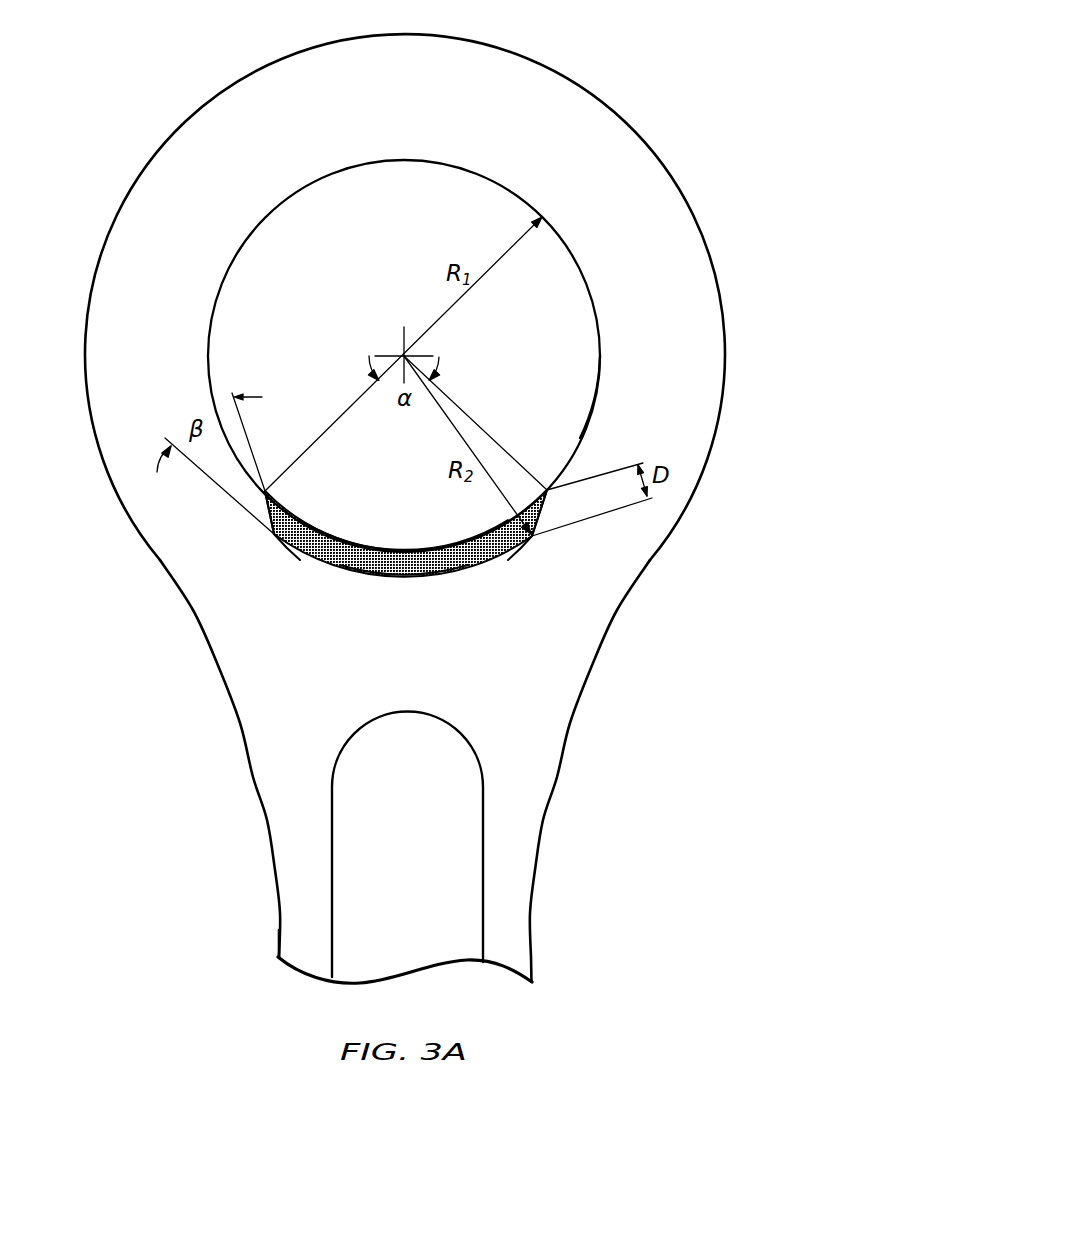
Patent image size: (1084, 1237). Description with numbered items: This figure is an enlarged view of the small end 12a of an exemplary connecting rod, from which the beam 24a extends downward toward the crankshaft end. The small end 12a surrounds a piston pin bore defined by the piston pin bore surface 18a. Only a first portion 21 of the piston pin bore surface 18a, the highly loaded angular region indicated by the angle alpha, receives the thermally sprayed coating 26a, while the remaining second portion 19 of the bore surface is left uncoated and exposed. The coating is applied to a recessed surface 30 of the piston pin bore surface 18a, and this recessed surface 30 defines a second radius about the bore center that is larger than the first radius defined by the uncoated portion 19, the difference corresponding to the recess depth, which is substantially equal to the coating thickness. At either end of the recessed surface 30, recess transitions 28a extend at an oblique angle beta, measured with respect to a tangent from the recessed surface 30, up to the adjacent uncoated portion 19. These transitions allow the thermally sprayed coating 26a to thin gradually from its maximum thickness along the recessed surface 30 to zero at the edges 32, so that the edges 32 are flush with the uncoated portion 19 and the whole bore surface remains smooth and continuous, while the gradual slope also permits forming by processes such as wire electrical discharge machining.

The small end 12a is at (627, 68).
The piston pin bore surface 18a is at (273, 213).
The second portion 19 is at (587, 423).
The first portion 21 is at (405, 548).
The beam 24a is at (298, 930).
The thermally sprayed coating 26a is at (437, 565).
The recess transitions 28a is at (285, 512).
The recessed surface 30 is at (369, 566).
The edges 32 is at (266, 476).